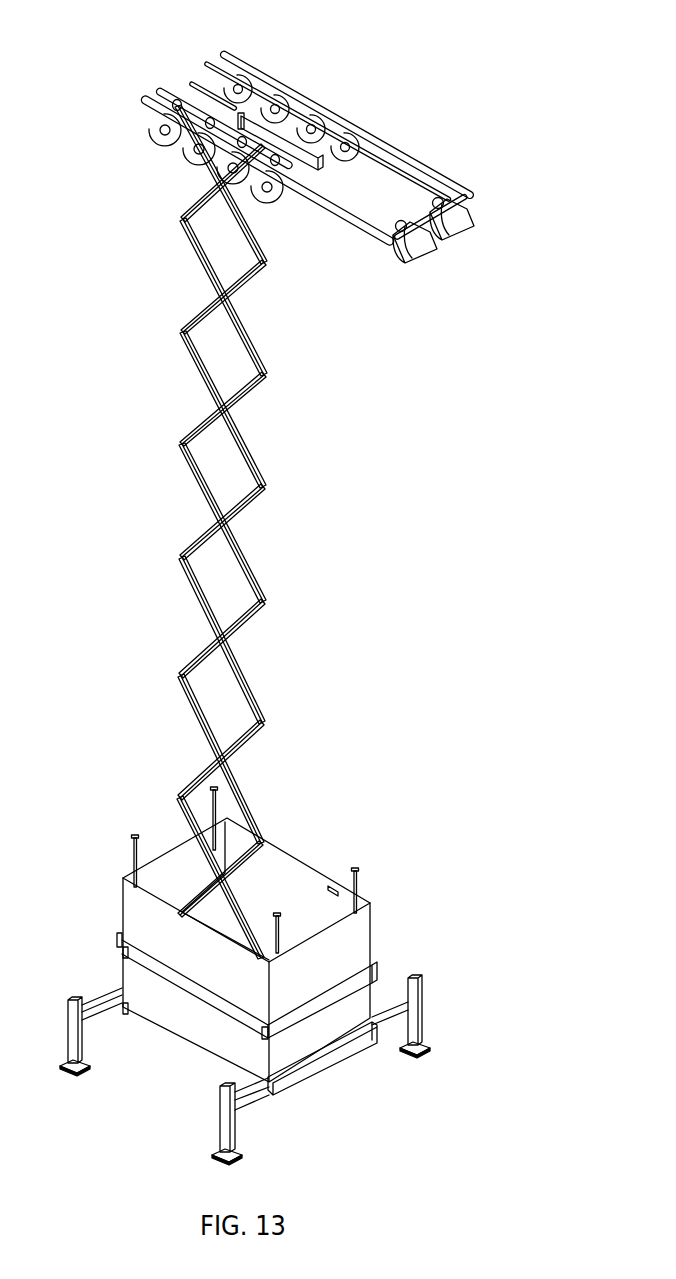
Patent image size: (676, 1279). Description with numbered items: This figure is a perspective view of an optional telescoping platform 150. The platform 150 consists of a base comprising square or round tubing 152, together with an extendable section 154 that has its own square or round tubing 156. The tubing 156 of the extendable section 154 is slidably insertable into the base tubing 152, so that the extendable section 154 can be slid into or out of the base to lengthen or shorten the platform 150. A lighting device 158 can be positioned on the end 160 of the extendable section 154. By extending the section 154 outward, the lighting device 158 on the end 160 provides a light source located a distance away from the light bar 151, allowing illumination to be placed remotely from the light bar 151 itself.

The telescoping platform 150 is at (313, 102).
The light bar 151 is at (189, 150).
The base tubing 152 is at (238, 52).
The extendable section 154 is at (464, 149).
The extendable section tubing 156 is at (378, 140).
The lighting device 158 is at (424, 257).
The end of the extendable section 160 is at (367, 240).